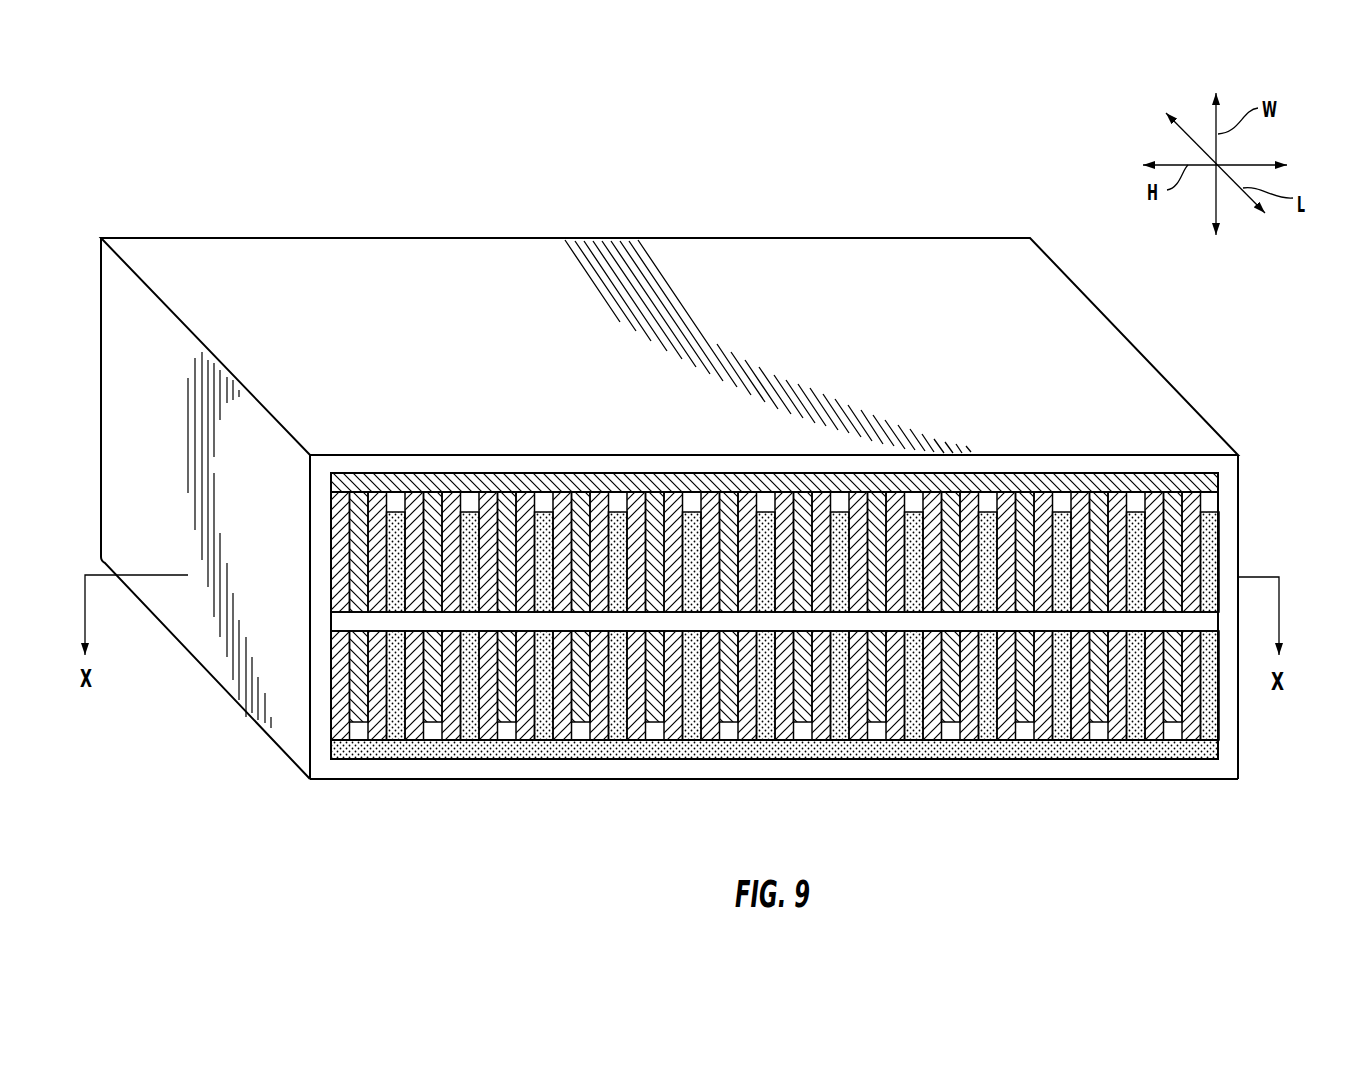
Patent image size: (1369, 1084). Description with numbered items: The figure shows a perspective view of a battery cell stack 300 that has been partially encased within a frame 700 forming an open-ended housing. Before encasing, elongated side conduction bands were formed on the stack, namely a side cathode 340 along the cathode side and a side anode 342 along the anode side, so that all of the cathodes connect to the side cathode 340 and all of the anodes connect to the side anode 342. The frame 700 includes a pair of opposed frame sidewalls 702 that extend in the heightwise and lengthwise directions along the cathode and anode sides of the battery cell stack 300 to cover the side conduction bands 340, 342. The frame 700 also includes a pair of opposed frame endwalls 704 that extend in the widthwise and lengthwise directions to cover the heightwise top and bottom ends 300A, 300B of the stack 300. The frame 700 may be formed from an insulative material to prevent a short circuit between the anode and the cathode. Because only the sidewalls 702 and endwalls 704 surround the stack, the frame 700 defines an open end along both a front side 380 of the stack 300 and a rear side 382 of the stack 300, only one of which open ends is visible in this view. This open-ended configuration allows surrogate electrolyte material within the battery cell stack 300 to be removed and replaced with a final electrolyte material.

The frame 700 is at (702, 497).
The frame sidewalls 702 is at (669, 497).
The frame endwalls 704 is at (140, 458).
The rear side 382 is at (478, 218).
The front side 380 is at (752, 772).
The battery cell stack 300 is at (768, 603).
The top end 300A is at (332, 668).
The bottom end 300B is at (1223, 561).
The side anode 342 is at (1126, 482).
The side cathode 340 is at (932, 750).